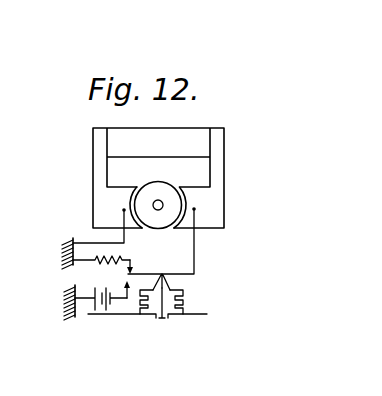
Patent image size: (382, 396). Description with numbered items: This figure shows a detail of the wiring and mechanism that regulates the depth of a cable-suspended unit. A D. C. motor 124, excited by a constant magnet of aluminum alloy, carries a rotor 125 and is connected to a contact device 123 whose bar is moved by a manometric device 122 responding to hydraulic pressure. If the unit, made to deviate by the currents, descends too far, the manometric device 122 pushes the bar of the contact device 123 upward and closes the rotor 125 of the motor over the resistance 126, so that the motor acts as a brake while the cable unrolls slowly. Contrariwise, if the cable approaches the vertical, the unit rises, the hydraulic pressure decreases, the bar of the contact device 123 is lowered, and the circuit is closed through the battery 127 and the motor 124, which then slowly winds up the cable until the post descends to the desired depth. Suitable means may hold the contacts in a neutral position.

The manometric device 122 is at (160, 319).
The contact device 123 is at (183, 274).
The D. C. motor 124 is at (190, 152).
The rotor 125 is at (167, 184).
The resistance 126 is at (95, 261).
The battery 127 is at (88, 314).